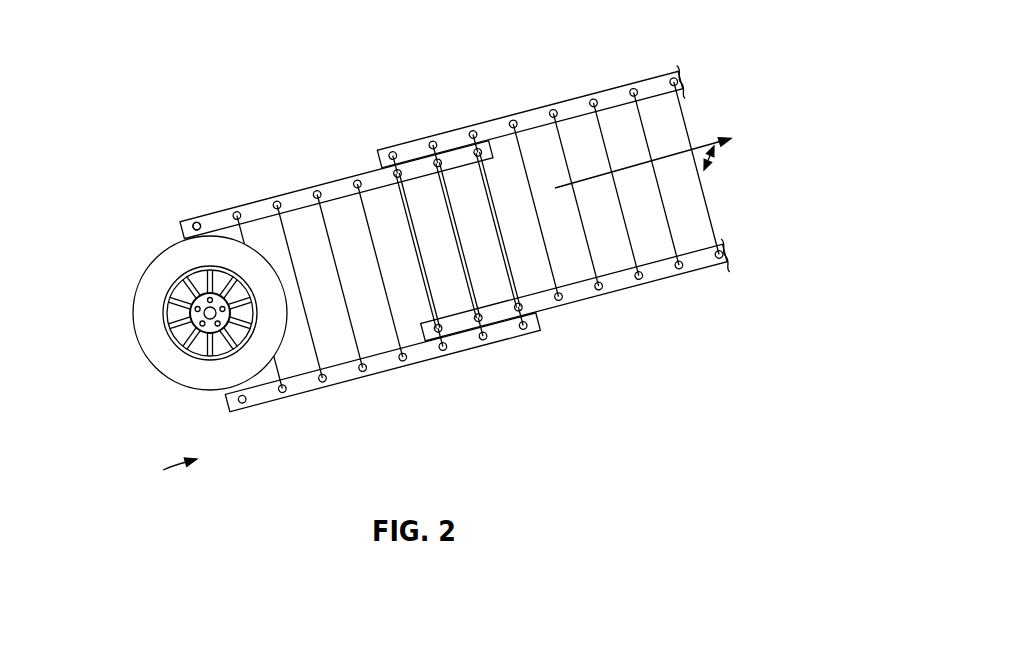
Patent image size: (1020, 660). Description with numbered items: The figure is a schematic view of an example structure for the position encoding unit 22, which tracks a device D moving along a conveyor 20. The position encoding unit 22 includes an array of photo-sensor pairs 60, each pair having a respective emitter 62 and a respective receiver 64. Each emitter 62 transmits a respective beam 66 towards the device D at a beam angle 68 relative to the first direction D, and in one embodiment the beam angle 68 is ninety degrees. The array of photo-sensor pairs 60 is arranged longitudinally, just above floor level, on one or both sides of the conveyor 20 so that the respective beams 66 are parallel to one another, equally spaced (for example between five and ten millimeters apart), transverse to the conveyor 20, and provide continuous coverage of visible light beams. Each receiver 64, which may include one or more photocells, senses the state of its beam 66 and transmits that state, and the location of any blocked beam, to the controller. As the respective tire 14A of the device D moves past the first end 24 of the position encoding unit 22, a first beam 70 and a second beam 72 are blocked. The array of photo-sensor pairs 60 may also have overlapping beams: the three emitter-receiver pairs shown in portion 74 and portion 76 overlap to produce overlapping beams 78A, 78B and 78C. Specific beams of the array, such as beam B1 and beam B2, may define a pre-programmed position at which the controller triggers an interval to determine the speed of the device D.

The respective tire 14A is at (133, 311).
The conveyor 20 is at (705, 147).
The position encoding unit 22 is at (455, 231).
The first end 24 is at (476, 325).
The array of photo-sensor pairs 60 is at (280, 297).
The respective emitter 62 is at (362, 367).
The respective receiver 64 is at (317, 194).
The respective beam 66 is at (339, 280).
The beam angle 68 is at (706, 170).
The first beam 70 is at (431, 151).
The second beam 72 is at (196, 225).
The portion 74 is at (486, 345).
The portion 76 is at (432, 134).
The overlapping beam 78A is at (418, 251).
The overlapping beam 78B is at (458, 240).
The overlapping beam 78C is at (498, 230).
The beam B1 is at (320, 286).
The beam B2 is at (616, 189).
The device D is at (168, 474).